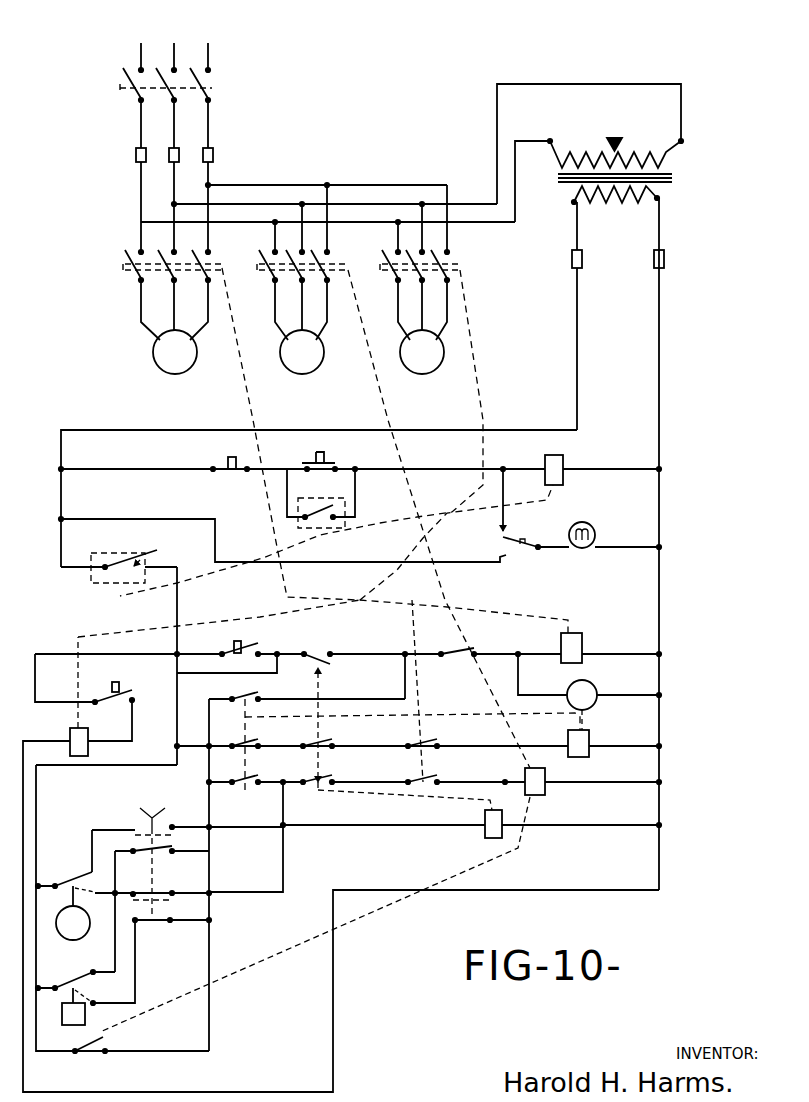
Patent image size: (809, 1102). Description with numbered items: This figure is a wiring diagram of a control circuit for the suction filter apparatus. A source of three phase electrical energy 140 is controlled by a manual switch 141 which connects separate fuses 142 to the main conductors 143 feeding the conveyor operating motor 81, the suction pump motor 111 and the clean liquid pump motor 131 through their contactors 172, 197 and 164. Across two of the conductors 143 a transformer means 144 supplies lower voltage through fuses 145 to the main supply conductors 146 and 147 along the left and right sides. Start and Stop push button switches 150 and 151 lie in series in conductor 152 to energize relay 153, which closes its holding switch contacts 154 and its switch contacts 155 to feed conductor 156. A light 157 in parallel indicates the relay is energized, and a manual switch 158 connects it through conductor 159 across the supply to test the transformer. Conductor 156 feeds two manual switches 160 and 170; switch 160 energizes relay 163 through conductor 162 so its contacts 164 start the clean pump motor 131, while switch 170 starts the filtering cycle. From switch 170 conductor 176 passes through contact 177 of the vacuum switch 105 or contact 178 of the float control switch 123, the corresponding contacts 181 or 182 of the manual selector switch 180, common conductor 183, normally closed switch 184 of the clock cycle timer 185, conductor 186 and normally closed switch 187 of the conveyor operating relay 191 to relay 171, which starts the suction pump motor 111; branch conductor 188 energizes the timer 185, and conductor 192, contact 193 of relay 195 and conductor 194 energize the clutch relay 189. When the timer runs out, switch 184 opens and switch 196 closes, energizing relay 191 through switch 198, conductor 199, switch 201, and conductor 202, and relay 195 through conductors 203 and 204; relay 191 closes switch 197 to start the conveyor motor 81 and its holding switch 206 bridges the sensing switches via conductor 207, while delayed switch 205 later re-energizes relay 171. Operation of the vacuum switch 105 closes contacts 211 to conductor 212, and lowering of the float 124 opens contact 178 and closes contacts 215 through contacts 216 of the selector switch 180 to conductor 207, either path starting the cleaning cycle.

The source of three phase electrical energy 140 is at (208, 40).
The switch 141 is at (128, 92).
The fuses 142 is at (210, 144).
The main conductors 143 is at (248, 214).
The transformer means 144 is at (673, 174).
The fuses 145 is at (652, 258).
The main supply conductor 146 is at (577, 306).
The main supply conductor 147 is at (662, 479).
The Start push button switch 150 is at (336, 463).
The Stop push button switch 151 is at (210, 464).
The conductor 152 is at (411, 468).
The relay 153 is at (563, 460).
The holding switch contacts 154 is at (330, 504).
The switch contacts 155 is at (128, 553).
The conductor 156 is at (177, 600).
The light 157 is at (583, 522).
The manual switch 158 is at (510, 539).
The conductor 159 is at (345, 562).
The manual switch 160 is at (127, 692).
The conductor 162 is at (118, 742).
The relay 163 is at (70, 752).
The contacts 164 is at (450, 263).
The manual switch 170 is at (245, 647).
The relay 171 is at (582, 642).
The suction pump motor contactor 172 is at (130, 276).
The conductor 176 is at (187, 674).
The contact 177 is at (93, 974).
The contact 178 is at (92, 872).
The manual selector switch 180 is at (140, 818).
The contact 181 is at (172, 851).
The contact 182 is at (171, 826).
The common conductor 183 is at (209, 723).
The switch 184 is at (256, 696).
The clock cycle timer 185 is at (594, 686).
The conductor 186 is at (337, 698).
The switch 187 is at (470, 647).
The branch conductor 188 is at (518, 682).
The clutch relay 189 is at (589, 740).
The conveyor operating relay 191 is at (545, 778).
The conductor 192 is at (258, 750).
The contact 193 is at (331, 745).
The conductor 194 is at (437, 745).
The relay 195 is at (502, 812).
The switch 196 is at (245, 780).
The switch 197 is at (334, 260).
The switch 198 is at (328, 780).
The conductor 199 is at (367, 783).
The switch 201 is at (434, 784).
The conductor 202 is at (504, 780).
The conductor 203 is at (286, 821).
The conductor 204 is at (364, 826).
The switch 205 is at (330, 664).
The holding switch 206 is at (108, 1052).
The conductor 207 is at (288, 862).
The contacts 211 is at (96, 1004).
The conductor 212 is at (135, 952).
The contacts 215 is at (94, 895).
The contacts 216 is at (171, 884).
The suction pump motor 111 is at (152, 352).
The conveyor operating motor 81 is at (280, 352).
The clean liquid pump motor 131 is at (400, 350).
The float control switch 123 is at (73, 880).
The float 124 is at (72, 940).
The vacuum switch 105 is at (80, 984).